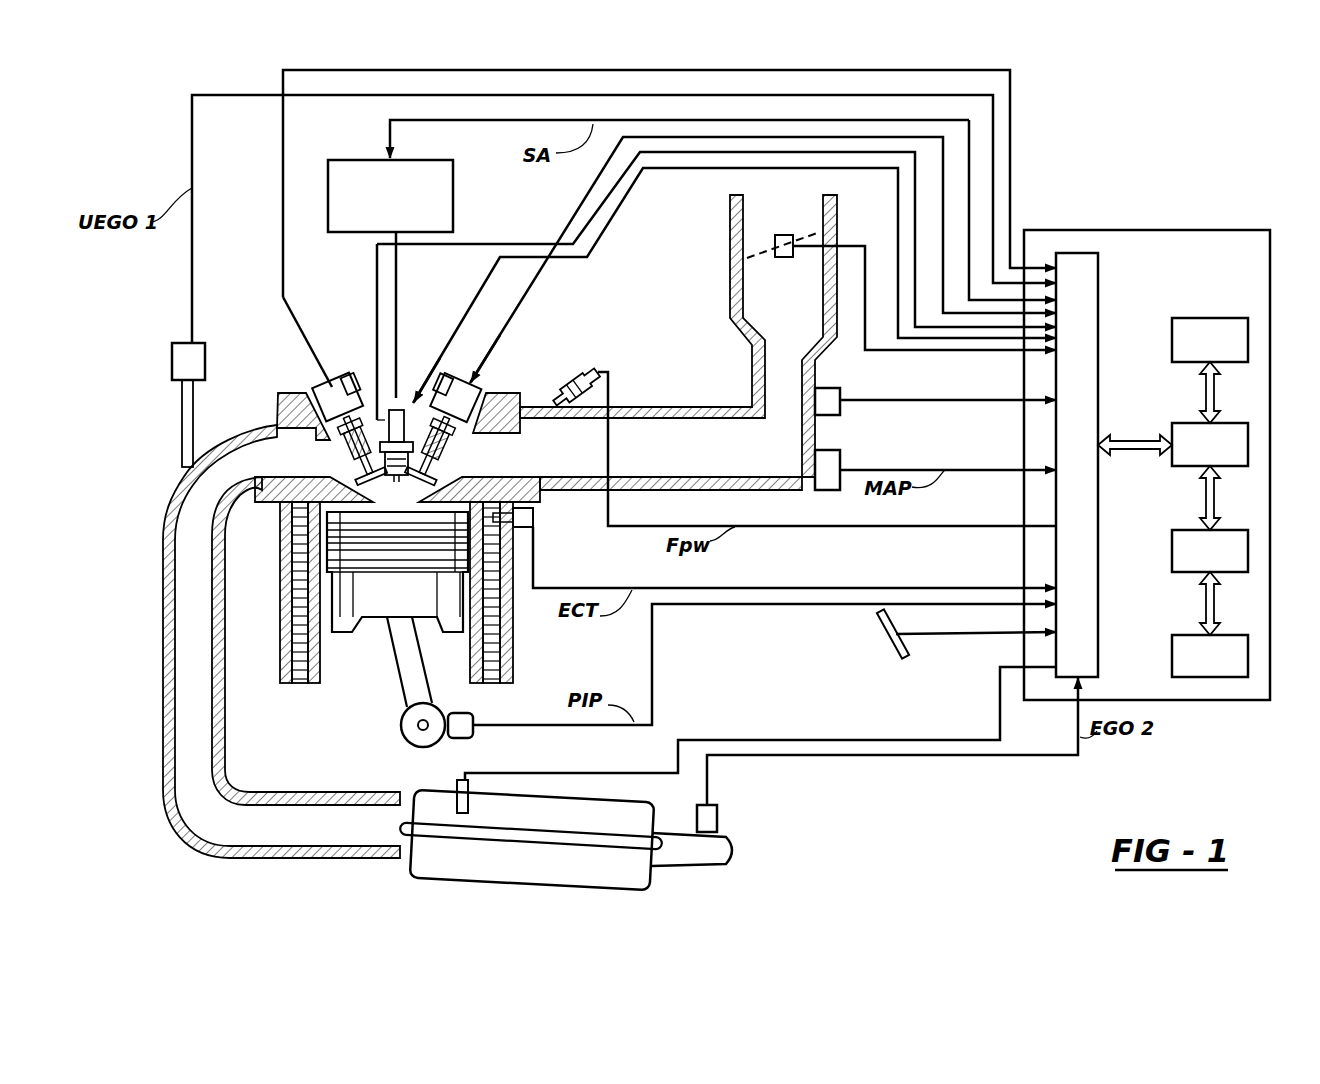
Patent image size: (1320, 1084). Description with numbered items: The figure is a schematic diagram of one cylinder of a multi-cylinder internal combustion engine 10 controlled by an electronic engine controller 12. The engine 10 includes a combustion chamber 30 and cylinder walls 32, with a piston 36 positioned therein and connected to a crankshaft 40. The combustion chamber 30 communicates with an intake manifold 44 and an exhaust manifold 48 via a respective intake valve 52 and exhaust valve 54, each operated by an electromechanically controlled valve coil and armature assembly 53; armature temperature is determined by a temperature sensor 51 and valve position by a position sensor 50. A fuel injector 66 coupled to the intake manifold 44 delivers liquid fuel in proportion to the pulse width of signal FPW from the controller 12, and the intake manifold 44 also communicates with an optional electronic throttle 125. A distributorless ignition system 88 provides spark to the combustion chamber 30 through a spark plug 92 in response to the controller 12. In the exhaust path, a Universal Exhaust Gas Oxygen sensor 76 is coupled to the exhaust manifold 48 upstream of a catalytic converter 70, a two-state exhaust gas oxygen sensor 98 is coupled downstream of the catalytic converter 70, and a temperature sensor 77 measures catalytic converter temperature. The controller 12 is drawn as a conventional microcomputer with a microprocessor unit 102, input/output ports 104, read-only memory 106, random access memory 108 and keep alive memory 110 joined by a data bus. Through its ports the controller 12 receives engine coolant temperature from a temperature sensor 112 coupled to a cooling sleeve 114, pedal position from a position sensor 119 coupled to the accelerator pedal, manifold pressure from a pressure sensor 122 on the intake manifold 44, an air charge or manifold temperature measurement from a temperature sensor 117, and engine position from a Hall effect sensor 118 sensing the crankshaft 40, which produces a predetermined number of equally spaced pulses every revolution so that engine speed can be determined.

The internal combustion engine 10 is at (278, 392).
The electronic engine controller 12 is at (1140, 230).
The combustion chamber 30 is at (394, 495).
The cylinder walls 32 is at (320, 668).
The piston 36 is at (390, 603).
The crankshaft 40 is at (402, 729).
The intake manifold 44 is at (718, 460).
The exhaust manifold 48 is at (192, 521).
The position sensor 50 is at (360, 371).
The temperature sensor 51 is at (438, 340).
The intake valve 52 is at (470, 463).
The electromechanically controlled valve coil and armature assembly 53 is at (322, 377).
The exhaust valve 54 is at (332, 467).
The fuel injector 66 is at (566, 372).
The catalytic converter 70 is at (470, 883).
The Universal Exhaust Gas Oxygen (UEGO) sensor 76 is at (172, 360).
The temperature sensor 77 is at (445, 787).
The distributorless ignition system 88 is at (453, 198).
The spark plug 92 is at (402, 386).
The two-state exhaust gas oxygen sensor 98 is at (722, 810).
The microprocessor unit 102 is at (1182, 423).
The input/output ports 104 is at (1100, 281).
The read-only memory 106 is at (1212, 318).
The random access memory 108 is at (1182, 530).
The keep alive memory 110 is at (1182, 635).
The temperature sensor 112 is at (522, 508).
The cooling sleeve 114 is at (297, 682).
The temperature sensor 117 is at (843, 386).
The Hall effect sensor 118 is at (470, 739).
The position sensor 119 is at (880, 646).
The pressure sensor 122 is at (843, 452).
The electronic throttle 125 is at (778, 233).